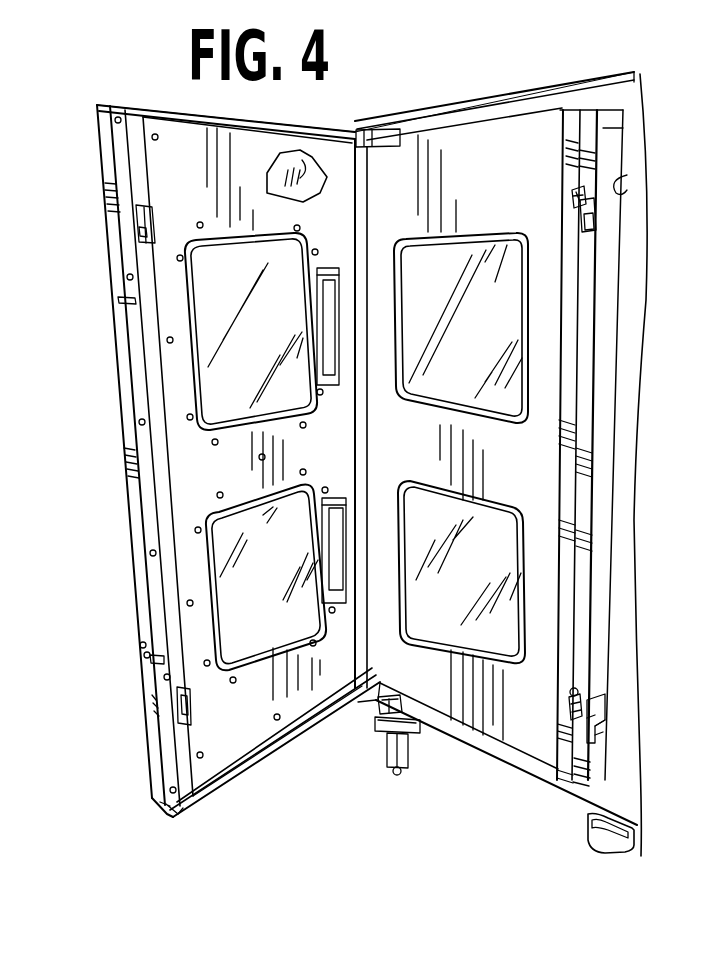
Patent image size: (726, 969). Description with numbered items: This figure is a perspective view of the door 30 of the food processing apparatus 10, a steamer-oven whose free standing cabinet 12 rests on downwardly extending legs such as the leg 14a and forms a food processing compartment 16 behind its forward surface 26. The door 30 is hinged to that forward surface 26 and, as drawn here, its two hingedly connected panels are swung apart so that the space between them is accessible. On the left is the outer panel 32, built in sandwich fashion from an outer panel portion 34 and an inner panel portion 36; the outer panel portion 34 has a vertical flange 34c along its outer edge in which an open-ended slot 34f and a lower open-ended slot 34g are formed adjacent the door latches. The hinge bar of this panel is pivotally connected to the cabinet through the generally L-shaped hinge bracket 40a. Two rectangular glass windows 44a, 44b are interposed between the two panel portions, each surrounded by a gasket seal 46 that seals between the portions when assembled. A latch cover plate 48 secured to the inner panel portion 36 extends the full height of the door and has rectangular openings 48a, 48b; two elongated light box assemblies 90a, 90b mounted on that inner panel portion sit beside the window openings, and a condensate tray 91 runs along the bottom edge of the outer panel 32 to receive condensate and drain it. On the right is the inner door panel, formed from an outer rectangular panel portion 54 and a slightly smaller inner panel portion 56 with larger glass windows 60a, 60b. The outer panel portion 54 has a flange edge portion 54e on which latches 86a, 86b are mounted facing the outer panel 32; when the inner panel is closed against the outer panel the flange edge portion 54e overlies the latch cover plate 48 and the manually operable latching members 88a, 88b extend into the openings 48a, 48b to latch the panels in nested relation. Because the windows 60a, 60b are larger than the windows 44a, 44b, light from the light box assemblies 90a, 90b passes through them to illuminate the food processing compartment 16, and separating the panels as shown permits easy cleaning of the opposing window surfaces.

The food processing apparatus 10 is at (659, 108).
The cabinet 12 is at (553, 76).
The leg 14a is at (380, 746).
The food processing compartment 16 is at (627, 182).
The forward surface 26 is at (627, 72).
The door 30 is at (114, 92).
The outer panel 32 is at (126, 520).
The outer panel portion 34 is at (302, 160).
The vertical flange 34c is at (150, 700).
The open-ended slot 34f is at (118, 302).
The open-ended slot 34g is at (150, 660).
The inner panel portion 36 is at (236, 762).
The hinge bracket 40a is at (380, 135).
The glass window 44a is at (232, 400).
The glass window 44b is at (238, 660).
The gasket seal 46 is at (294, 418).
The latch cover plate 48 is at (140, 165).
The rectangular opening 48a is at (140, 228).
The rectangular opening 48b is at (178, 722).
The outer rectangular panel portion 54 is at (455, 700).
The flange edge portion 54e is at (586, 330).
The inner panel portion 56 is at (550, 620).
The glass window 60a is at (460, 255).
The glass window 60b is at (495, 535).
The latch 86a is at (592, 220).
The latch 86b is at (592, 697).
The latching member 88a is at (578, 200).
The latching member 88b is at (568, 720).
The light box assembly 90a is at (333, 268).
The light box assembly 90b is at (338, 500).
The condensate tray 91 is at (292, 745).